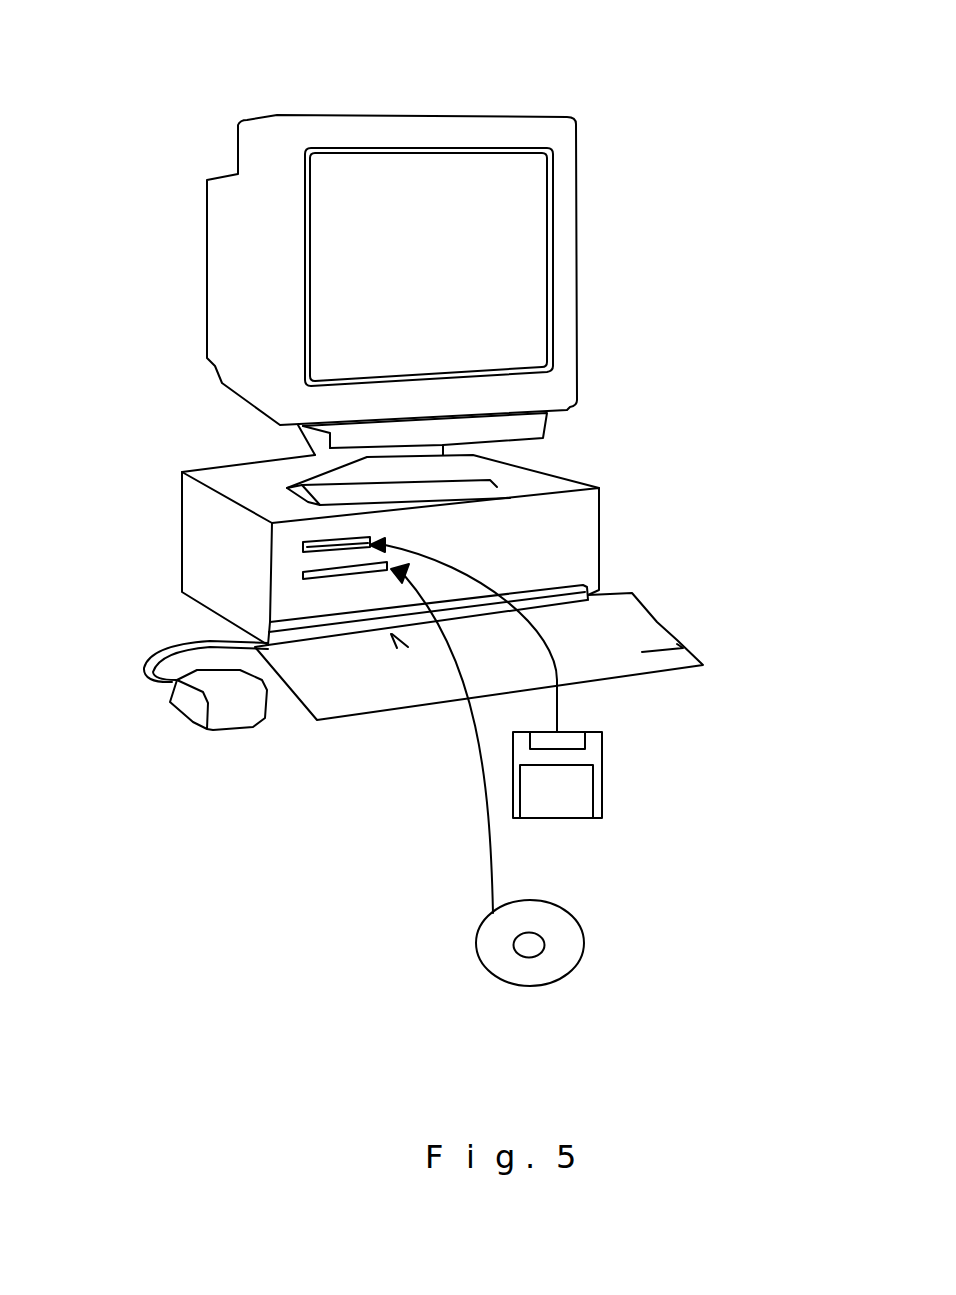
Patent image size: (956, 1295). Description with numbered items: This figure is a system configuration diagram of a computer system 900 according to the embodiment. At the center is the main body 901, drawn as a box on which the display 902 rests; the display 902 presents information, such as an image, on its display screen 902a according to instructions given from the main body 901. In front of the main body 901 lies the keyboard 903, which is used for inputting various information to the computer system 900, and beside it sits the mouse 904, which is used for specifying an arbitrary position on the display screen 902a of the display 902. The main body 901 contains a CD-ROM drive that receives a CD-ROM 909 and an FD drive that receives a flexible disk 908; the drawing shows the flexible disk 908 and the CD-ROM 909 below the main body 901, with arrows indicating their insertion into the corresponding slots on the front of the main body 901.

The computer system 900 is at (439, 515).
The main body 901 is at (567, 495).
The display 902 is at (407, 285).
The display screen 902a is at (513, 202).
The keyboard 903 is at (703, 665).
The mouse 904 is at (172, 702).
The flexible disk (FD) 908 is at (555, 820).
The CD-ROM 909 is at (530, 987).